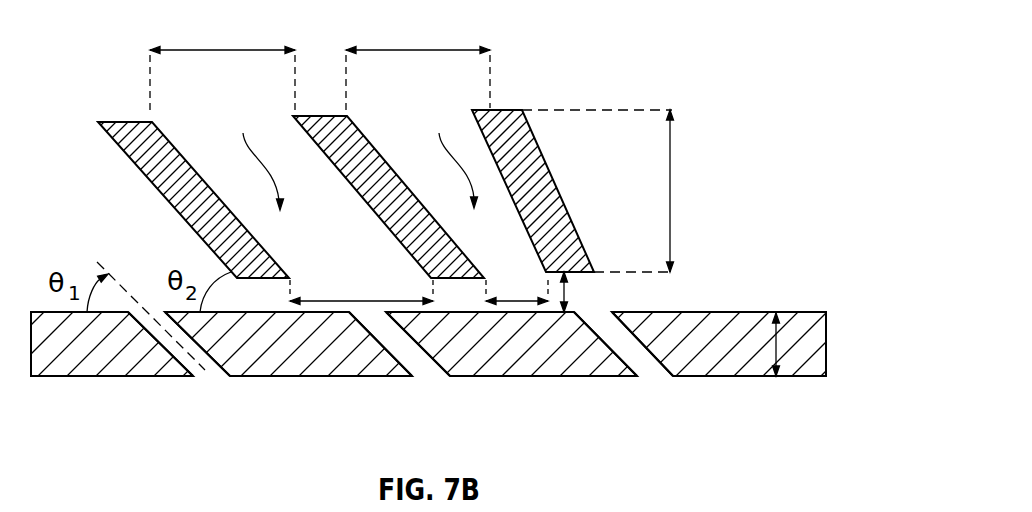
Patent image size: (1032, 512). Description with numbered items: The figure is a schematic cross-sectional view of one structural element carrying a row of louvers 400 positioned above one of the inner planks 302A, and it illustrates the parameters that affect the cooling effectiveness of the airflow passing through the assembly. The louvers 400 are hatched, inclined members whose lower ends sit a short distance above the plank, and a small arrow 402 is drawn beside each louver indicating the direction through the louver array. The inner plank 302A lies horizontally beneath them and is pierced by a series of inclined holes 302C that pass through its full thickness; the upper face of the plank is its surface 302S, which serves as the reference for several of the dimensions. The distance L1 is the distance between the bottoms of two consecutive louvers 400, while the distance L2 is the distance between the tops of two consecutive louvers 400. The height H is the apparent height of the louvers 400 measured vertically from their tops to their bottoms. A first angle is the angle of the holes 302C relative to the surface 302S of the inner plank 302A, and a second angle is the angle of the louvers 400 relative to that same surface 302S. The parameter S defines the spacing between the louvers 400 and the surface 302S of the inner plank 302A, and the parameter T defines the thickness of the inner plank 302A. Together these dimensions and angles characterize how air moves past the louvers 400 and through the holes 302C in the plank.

The louvers 400 is at (137, 135).
The light/airflow direction 402 is at (350, 158).
The inner planks 302A is at (810, 336).
The surface 302S is at (744, 313).
The holes 302C is at (200, 367).
The distance L1 is at (419, 286).
The distance L2 is at (320, 65).
The height H is at (609, 191).
The spacing S is at (577, 292).
The thickness T is at (780, 345).